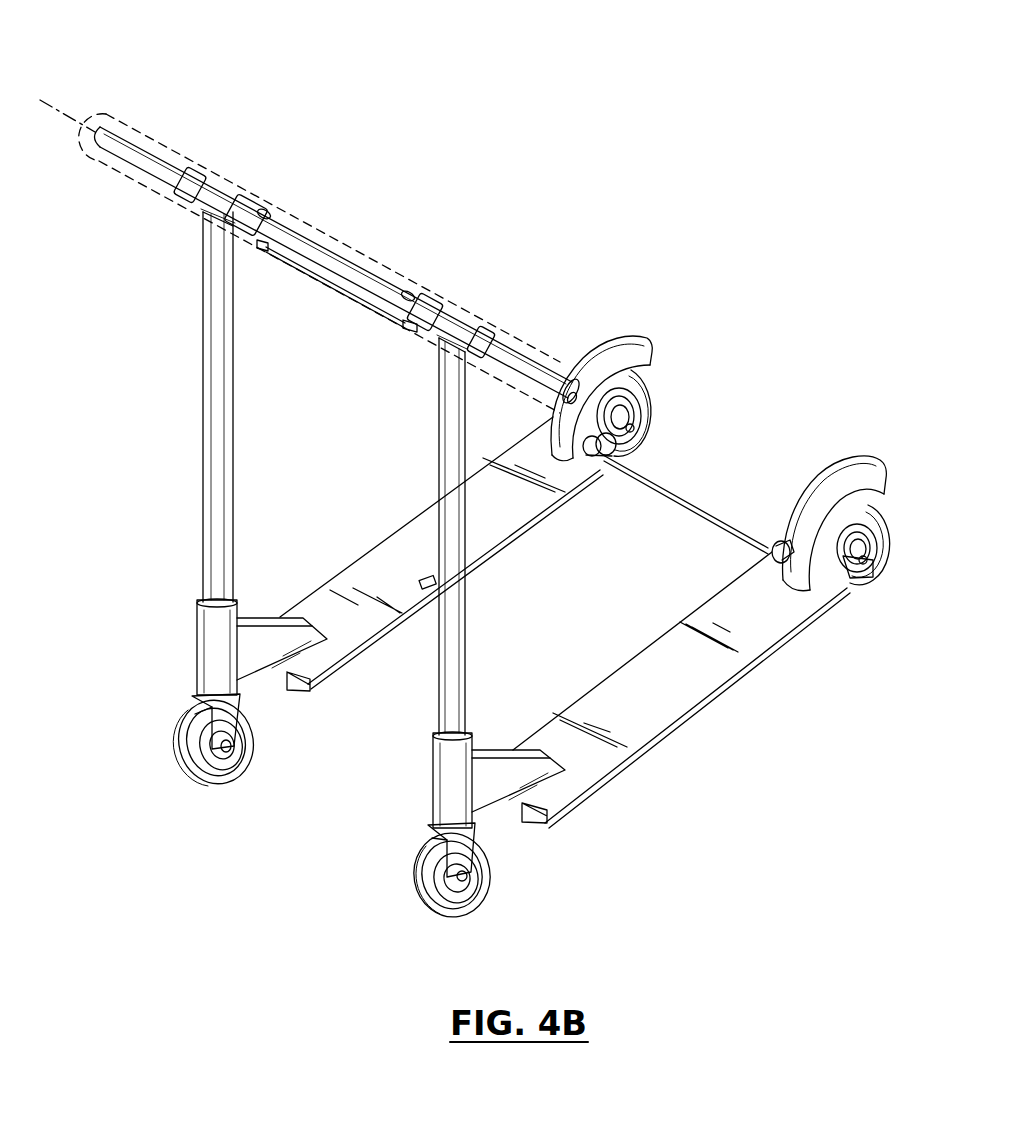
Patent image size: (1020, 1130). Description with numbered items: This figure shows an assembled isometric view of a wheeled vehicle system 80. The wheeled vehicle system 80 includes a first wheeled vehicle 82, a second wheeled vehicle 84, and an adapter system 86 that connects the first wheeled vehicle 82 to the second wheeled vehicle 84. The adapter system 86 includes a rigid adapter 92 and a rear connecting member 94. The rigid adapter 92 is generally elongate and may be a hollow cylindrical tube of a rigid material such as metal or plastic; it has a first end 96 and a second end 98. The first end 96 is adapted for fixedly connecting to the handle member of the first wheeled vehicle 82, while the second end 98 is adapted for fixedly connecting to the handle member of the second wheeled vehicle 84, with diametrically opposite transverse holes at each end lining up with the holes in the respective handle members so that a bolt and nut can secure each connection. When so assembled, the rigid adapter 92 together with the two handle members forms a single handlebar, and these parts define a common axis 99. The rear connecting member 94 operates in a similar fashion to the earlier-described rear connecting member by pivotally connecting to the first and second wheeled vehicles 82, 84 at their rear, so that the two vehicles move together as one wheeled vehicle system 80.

The wheeled vehicle system 80 is at (746, 153).
The first wheeled vehicle 82 is at (350, 490).
The second wheeled vehicle 84 is at (736, 769).
The adapter system 86 is at (756, 397).
The rigid adapter 92 is at (343, 250).
The rear connecting member 94 is at (720, 510).
The first end 96 is at (258, 206).
The second end 98 is at (428, 297).
The common axis 99 is at (55, 108).